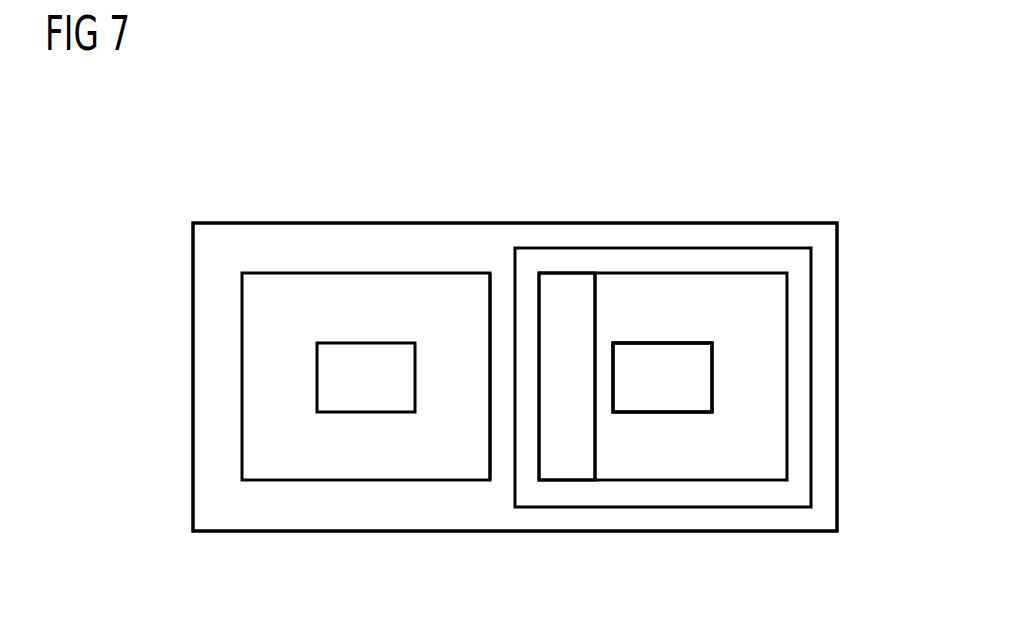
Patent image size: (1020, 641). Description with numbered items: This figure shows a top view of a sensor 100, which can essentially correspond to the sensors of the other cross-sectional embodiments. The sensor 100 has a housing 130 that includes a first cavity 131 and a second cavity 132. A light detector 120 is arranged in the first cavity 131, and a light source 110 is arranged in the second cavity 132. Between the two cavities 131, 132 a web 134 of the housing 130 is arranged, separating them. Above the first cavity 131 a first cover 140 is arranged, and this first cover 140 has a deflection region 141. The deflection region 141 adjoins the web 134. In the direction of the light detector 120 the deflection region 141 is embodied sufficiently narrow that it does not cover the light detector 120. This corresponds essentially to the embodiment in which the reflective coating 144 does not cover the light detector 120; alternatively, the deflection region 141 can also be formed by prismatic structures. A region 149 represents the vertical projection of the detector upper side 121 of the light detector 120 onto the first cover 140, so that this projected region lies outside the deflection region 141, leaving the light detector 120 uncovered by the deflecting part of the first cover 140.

The sensor 100 is at (197, 163).
The light source 110 is at (370, 395).
The light detector 120 is at (663, 395).
The detector upper side 121 is at (700, 379).
The housing 130 is at (823, 290).
The first cavity 131 is at (763, 448).
The second cavity 132 is at (284, 448).
The web 134 is at (497, 452).
The first cover 140 is at (806, 434).
The deflection region 141 is at (567, 305).
The reflective coating 144 is at (567, 448).
The region 149 is at (662, 363).